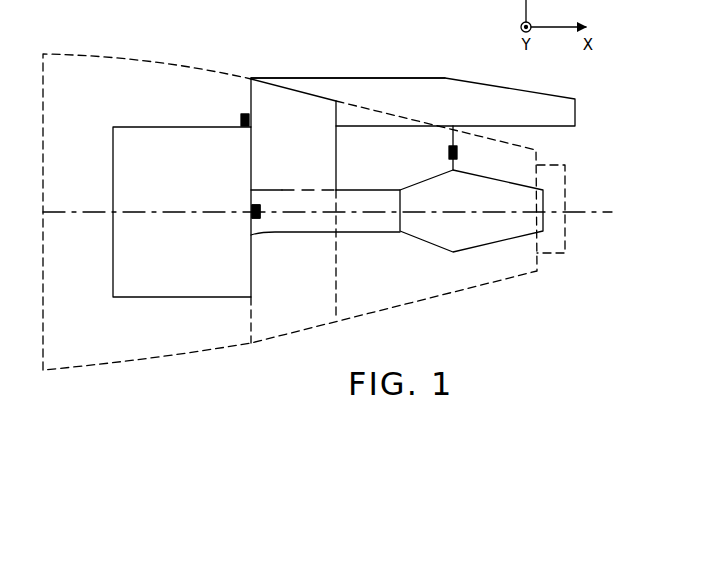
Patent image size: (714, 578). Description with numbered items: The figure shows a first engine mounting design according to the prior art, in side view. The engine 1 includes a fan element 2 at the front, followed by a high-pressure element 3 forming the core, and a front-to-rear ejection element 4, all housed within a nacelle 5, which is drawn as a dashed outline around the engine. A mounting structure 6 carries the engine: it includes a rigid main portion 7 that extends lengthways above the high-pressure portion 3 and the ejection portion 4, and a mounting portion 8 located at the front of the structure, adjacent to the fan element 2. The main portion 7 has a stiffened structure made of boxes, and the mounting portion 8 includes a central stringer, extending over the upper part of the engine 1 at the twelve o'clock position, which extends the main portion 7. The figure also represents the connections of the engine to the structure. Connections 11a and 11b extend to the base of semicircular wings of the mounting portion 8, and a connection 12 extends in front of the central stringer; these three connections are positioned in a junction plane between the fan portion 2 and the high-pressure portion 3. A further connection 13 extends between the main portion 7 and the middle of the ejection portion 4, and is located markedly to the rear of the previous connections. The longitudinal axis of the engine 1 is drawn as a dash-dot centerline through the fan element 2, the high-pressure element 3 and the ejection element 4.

The engine 1 is at (146, 409).
The fan element 2 is at (196, 304).
The high-pressure element 3 is at (380, 224).
The ejection element 4 is at (497, 244).
The nacelle 5 is at (70, 54).
The structure 6 is at (431, 66).
The main portion 7 is at (364, 76).
The mounting portion 8 is at (288, 88).
The connection 11a is at (259, 216).
The connection 11b is at (287, 257).
The connection 12 is at (245, 114).
The connection 13 is at (457, 149).